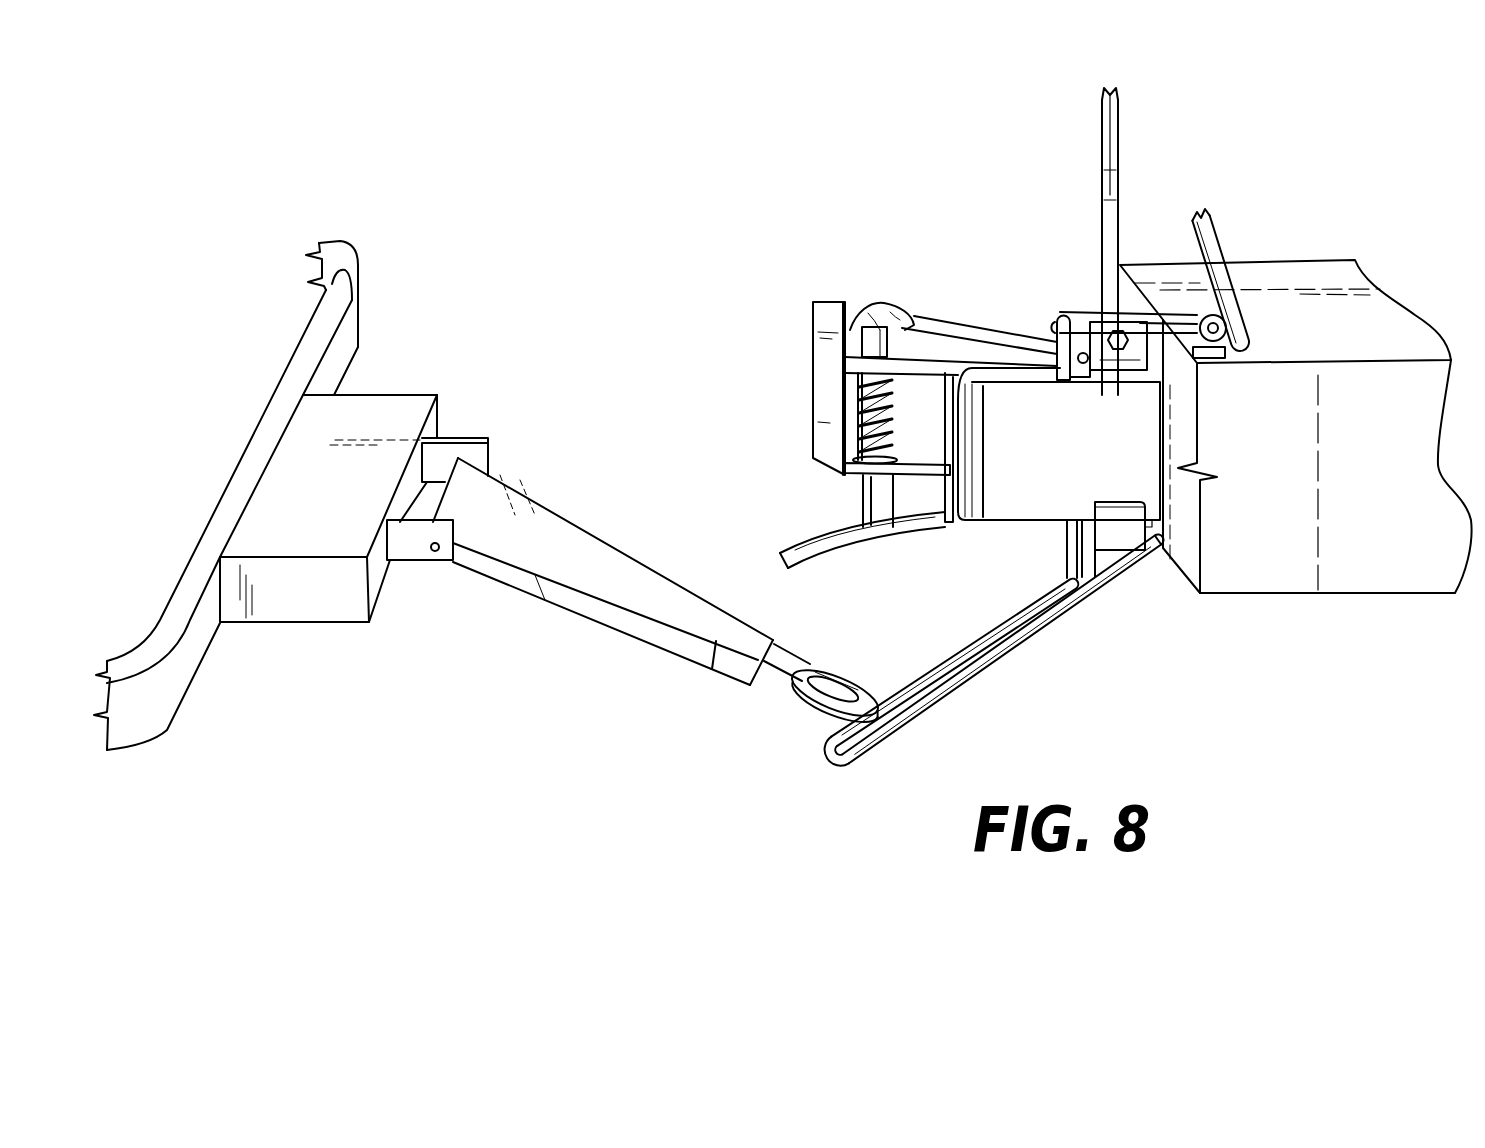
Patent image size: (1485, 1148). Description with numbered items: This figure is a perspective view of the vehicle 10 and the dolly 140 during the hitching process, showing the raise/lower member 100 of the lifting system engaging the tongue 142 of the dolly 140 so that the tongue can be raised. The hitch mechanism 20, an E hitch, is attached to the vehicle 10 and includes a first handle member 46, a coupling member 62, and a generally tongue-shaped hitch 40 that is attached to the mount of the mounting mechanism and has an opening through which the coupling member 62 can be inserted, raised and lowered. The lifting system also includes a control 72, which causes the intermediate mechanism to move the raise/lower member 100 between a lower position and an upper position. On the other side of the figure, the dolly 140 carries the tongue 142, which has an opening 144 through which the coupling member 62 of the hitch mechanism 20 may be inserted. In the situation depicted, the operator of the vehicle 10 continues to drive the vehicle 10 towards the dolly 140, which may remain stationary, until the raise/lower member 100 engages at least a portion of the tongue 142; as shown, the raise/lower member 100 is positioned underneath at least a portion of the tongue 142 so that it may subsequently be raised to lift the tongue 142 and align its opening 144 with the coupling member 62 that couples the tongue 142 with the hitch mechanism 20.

The vehicle 10 is at (1280, 596).
The hitch mechanism 20 is at (792, 382).
The hitch 40 is at (819, 560).
The first handle member 46 is at (1113, 203).
The coupling member 62 is at (877, 495).
The control 72 is at (1214, 250).
The raise/lower member 100 is at (858, 766).
The dolly 140 is at (143, 755).
The tongue 142 is at (628, 623).
The opening 144 is at (797, 672).